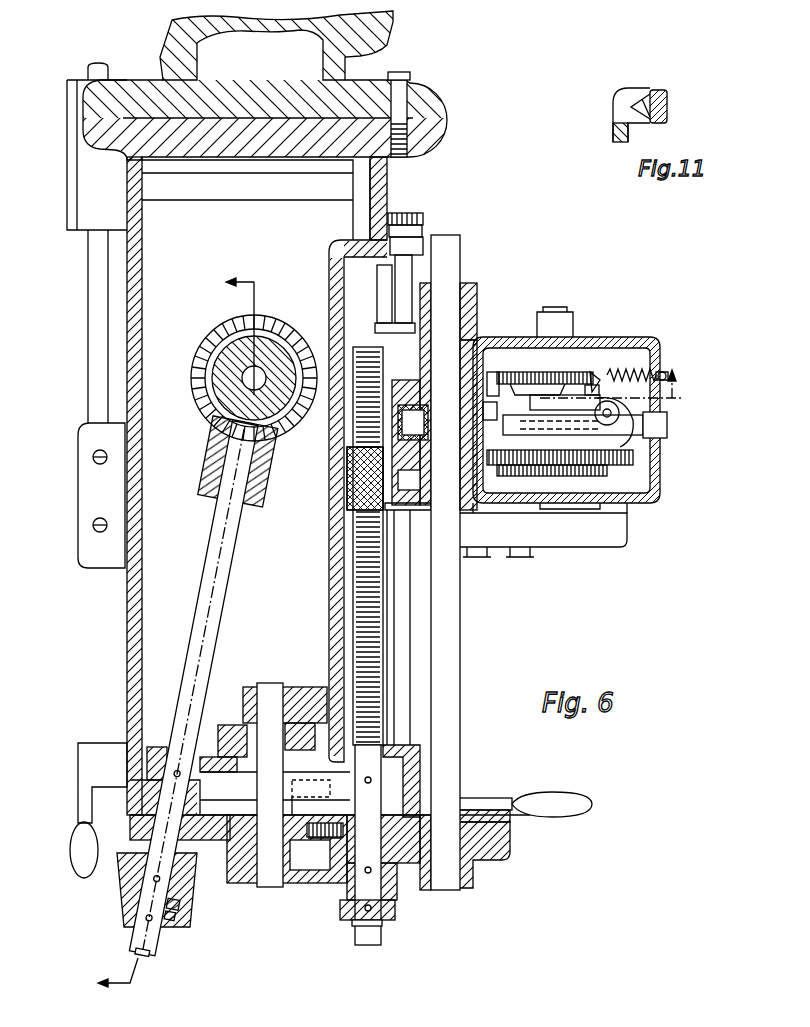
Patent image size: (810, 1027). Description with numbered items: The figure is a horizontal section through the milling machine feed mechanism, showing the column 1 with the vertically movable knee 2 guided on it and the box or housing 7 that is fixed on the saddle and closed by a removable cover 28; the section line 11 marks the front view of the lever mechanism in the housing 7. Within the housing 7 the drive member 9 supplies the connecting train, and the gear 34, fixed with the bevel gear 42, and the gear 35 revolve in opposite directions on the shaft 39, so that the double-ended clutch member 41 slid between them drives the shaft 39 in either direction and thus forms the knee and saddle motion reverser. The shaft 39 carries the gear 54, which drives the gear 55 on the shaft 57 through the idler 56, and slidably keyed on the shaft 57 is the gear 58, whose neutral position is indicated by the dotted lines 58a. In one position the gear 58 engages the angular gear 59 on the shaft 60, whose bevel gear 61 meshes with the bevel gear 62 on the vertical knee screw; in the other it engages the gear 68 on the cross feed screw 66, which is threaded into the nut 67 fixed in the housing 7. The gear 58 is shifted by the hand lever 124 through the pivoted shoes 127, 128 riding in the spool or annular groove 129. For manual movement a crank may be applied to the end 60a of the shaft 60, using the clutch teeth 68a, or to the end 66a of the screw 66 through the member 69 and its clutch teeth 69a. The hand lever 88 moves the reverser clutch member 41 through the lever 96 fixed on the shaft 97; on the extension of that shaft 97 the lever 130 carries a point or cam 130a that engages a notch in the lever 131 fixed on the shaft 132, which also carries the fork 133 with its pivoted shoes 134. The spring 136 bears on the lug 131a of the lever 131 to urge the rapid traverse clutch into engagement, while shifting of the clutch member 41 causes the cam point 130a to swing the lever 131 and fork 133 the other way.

In FIG. 6, the column 1 is at (392, 22).
In FIG. 6, the knee 2 is at (422, 158).
In FIG. 6, the box or housing 7 is at (488, 506).
In FIG. 6, the drive member 9 is at (181, 630).
In FIG. 6, the section line 11 is at (625, 389).
In FIG. 6, the cover 28 is at (624, 546).
In FIG. 6, the gear 34 is at (491, 385).
In FIG. 6, the gear 35 is at (409, 480).
In FIG. 6, the shaft 39 is at (460, 608).
In FIG. 6, the clutch member 41 is at (479, 456).
In FIG. 6, the bevel gear 42 is at (473, 343).
In FIG. 6, the gear 54 is at (490, 860).
In FIG. 6, the gear 55 is at (296, 850).
In FIG. 6, the idler 56 is at (313, 846).
In FIG. 6, the shaft 57 is at (270, 889).
In FIG. 6, the gear 58 is at (309, 786).
In FIG. 6, the dotted lines 58a is at (313, 872).
In FIG. 6, the angular gear 59 is at (156, 746).
In FIG. 6, the shaft 60 is at (191, 655).
In FIG. 6, the end of shaft 60a is at (137, 951).
In FIG. 6, the bevel gear 61 is at (212, 433).
In FIG. 6, the bevel gear 62 is at (192, 379).
In FIG. 6, the cross feed screw 66 is at (353, 655).
In FIG. 6, the end of screw 66a is at (371, 950).
In FIG. 6, the nut 67 is at (348, 498).
In FIG. 6, the gear 68 is at (425, 769).
In FIG. 6, the clutch teeth 68a is at (160, 936).
In FIG. 6, the member 69 is at (396, 911).
In FIG. 6, the clutch teeth 69a is at (384, 927).
In FIG. 6, the hand lever 88 is at (560, 796).
In FIG. 6, the lever 96 is at (492, 410).
In FIG. 6, the shaft 97 is at (668, 426).
In FIG. 6, the hand lever 124 is at (70, 866).
In FIG. 6, the pivoted shoe 127 is at (233, 730).
In FIG. 6, the pivoted shoe 128 is at (297, 725).
In FIG. 6, the spool or annular groove 129 is at (244, 720).
In FIG. 6, the lever 130 is at (667, 373).
In FIG. 11, the lever 130 is at (669, 109).
In FIG. 11, the point or cam 130a is at (652, 96).
In FIG. 6, the lever 131 is at (593, 372).
In FIG. 11, the lever 131 is at (613, 133).
In FIG. 6, the lug 131a is at (599, 382).
In FIG. 6, the shaft 132 is at (636, 442).
In FIG. 6, the fork 133 is at (586, 422).
In FIG. 6, the pivoted shoes 134 is at (545, 381).
In FIG. 6, the spring 136 is at (631, 365).